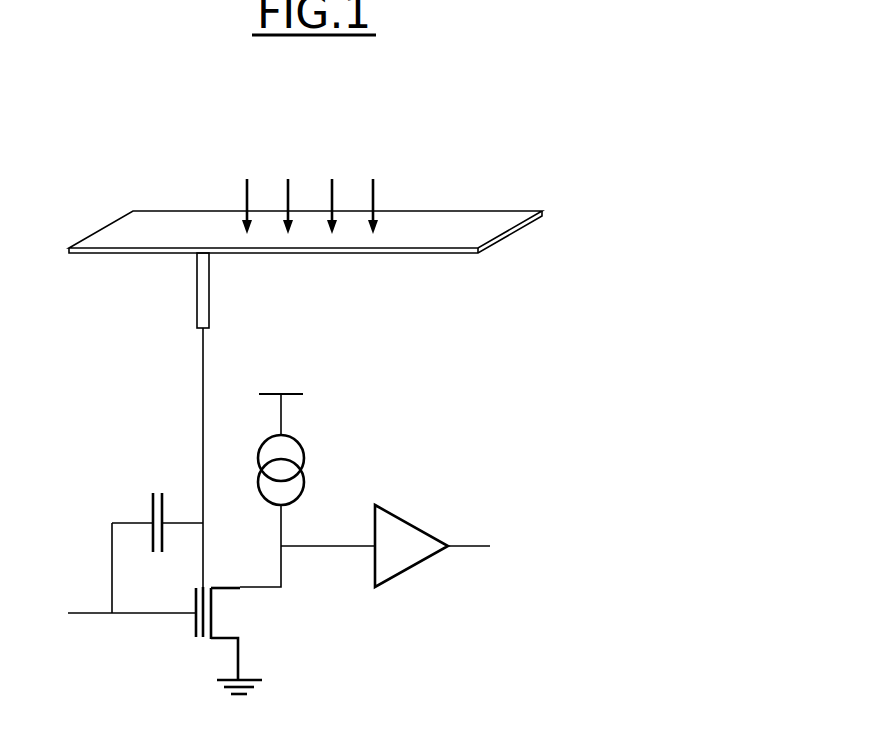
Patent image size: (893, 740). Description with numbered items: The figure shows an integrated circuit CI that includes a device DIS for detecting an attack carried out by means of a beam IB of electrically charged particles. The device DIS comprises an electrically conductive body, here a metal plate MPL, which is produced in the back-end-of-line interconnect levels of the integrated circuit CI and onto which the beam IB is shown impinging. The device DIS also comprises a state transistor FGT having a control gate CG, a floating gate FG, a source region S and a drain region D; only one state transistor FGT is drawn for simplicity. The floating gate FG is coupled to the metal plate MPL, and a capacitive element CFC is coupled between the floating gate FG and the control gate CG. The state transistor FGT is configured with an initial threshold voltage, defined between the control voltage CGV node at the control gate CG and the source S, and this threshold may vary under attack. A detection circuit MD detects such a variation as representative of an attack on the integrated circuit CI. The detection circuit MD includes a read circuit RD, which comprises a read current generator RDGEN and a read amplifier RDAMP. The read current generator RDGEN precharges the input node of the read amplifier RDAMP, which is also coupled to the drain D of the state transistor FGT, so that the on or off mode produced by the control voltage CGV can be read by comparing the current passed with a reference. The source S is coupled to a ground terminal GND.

The detection device DIS is at (72, 163).
The integrated circuit CI is at (572, 90).
The metal plate MPL is at (545, 212).
The beam of electrically charged particles IB is at (310, 191).
The detection circuit MD is at (486, 378).
The read circuit RD is at (431, 473).
The read current generator RDGEN is at (305, 456).
The read amplifier RDAMP is at (412, 570).
The capacitive element CFC is at (152, 497).
The control voltage CGV is at (105, 574).
The state transistor FGT is at (244, 620).
The control gate CG is at (194, 632).
The floating gate FG is at (198, 639).
The drain region D is at (225, 585).
The source region S is at (223, 641).
The ground terminal GND is at (264, 681).